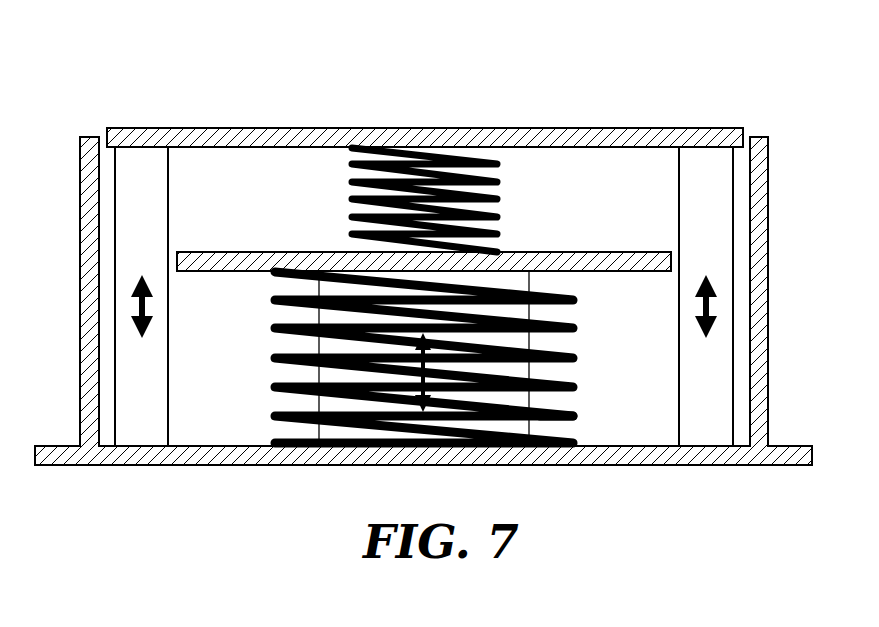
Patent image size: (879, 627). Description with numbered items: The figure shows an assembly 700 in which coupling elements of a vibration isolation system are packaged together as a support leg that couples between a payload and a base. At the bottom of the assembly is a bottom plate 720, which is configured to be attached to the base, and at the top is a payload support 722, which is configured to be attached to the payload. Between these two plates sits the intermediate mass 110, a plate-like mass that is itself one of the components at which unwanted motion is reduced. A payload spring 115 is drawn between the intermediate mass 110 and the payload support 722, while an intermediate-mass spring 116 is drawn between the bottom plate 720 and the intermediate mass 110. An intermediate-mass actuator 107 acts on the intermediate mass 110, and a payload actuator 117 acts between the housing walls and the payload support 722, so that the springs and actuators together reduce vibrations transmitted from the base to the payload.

The assembly 700 is at (134, 70).
The payload support 722 is at (577, 128).
The payload actuator 117 is at (424, 296).
The intermediate mass 110 is at (265, 252).
The payload spring 115 is at (498, 215).
The intermediate-mass actuator 107 is at (530, 347).
The intermediate-mass spring 116 is at (575, 415).
The bottom plate 720 is at (225, 445).